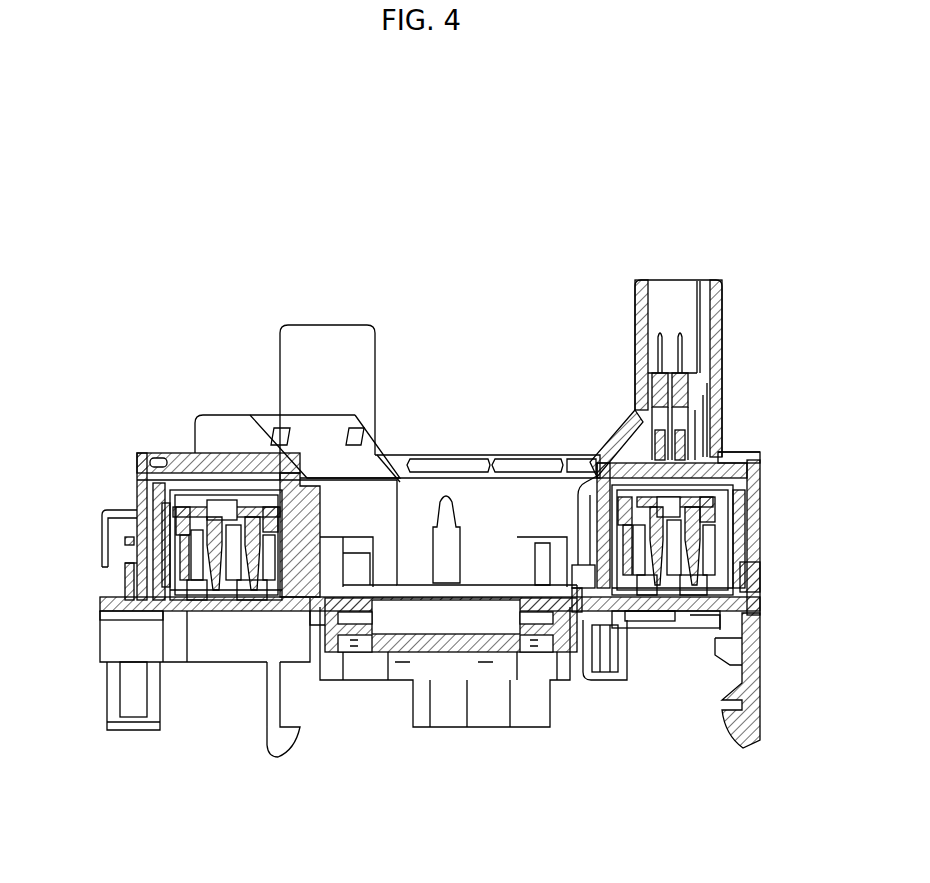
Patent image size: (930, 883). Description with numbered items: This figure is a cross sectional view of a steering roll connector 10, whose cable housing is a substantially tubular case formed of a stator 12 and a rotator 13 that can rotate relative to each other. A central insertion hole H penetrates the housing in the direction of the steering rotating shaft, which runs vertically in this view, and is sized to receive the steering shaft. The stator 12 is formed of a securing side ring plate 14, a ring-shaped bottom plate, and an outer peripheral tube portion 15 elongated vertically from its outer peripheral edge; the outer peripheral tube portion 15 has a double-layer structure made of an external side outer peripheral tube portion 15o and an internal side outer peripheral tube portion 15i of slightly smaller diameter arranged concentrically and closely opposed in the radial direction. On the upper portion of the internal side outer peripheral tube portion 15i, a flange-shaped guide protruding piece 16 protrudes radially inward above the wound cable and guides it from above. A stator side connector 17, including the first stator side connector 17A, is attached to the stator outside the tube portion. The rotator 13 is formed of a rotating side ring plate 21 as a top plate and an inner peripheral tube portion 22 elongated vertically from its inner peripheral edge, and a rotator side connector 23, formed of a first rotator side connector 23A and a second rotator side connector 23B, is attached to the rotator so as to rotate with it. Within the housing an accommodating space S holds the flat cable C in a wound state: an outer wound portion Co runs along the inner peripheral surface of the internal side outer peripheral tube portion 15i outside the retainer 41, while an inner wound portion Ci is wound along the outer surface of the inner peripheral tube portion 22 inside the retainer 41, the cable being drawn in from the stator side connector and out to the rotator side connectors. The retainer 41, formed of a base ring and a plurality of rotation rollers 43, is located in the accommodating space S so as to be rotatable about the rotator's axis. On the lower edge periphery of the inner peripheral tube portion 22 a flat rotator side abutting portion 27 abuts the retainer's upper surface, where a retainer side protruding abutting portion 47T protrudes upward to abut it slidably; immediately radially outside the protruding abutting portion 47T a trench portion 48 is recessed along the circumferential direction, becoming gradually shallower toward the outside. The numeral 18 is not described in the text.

The steering roll connector 10 is at (200, 292).
The stator 12 is at (201, 686).
The rotator 13 is at (457, 450).
The securing side ring plate 14 is at (187, 620).
The outer peripheral tube portion 15 is at (57, 482).
The external side outer peripheral tube portion 15o is at (136, 500).
The internal side outer peripheral tube portion 15i is at (122, 573).
The guide protruding piece 16 is at (163, 432).
The stator side connector 17 is at (392, 622).
The first stator side connector 17A is at (82, 648).
The retaining member 18 is at (153, 500).
The rotating side ring plate 21 is at (175, 432).
The inner peripheral tube portion 22 is at (322, 500).
The rotator side connector 23 is at (467, 354).
The first rotator side connector 23A is at (331, 325).
The second rotator side connector 23B is at (666, 280).
The rotator side abutting portion 27 is at (607, 623).
The retainer 41 is at (722, 585).
The rotation roller 43 is at (748, 505).
The retainer side protruding abutting portion 47T is at (595, 565).
The trench portion 48 is at (291, 618).
The flat cable C is at (673, 573).
The inner wound portion Ci is at (585, 492).
The outer wound portion Co is at (733, 543).
The insertion hole H is at (505, 524).
The accommodating space S is at (718, 452).